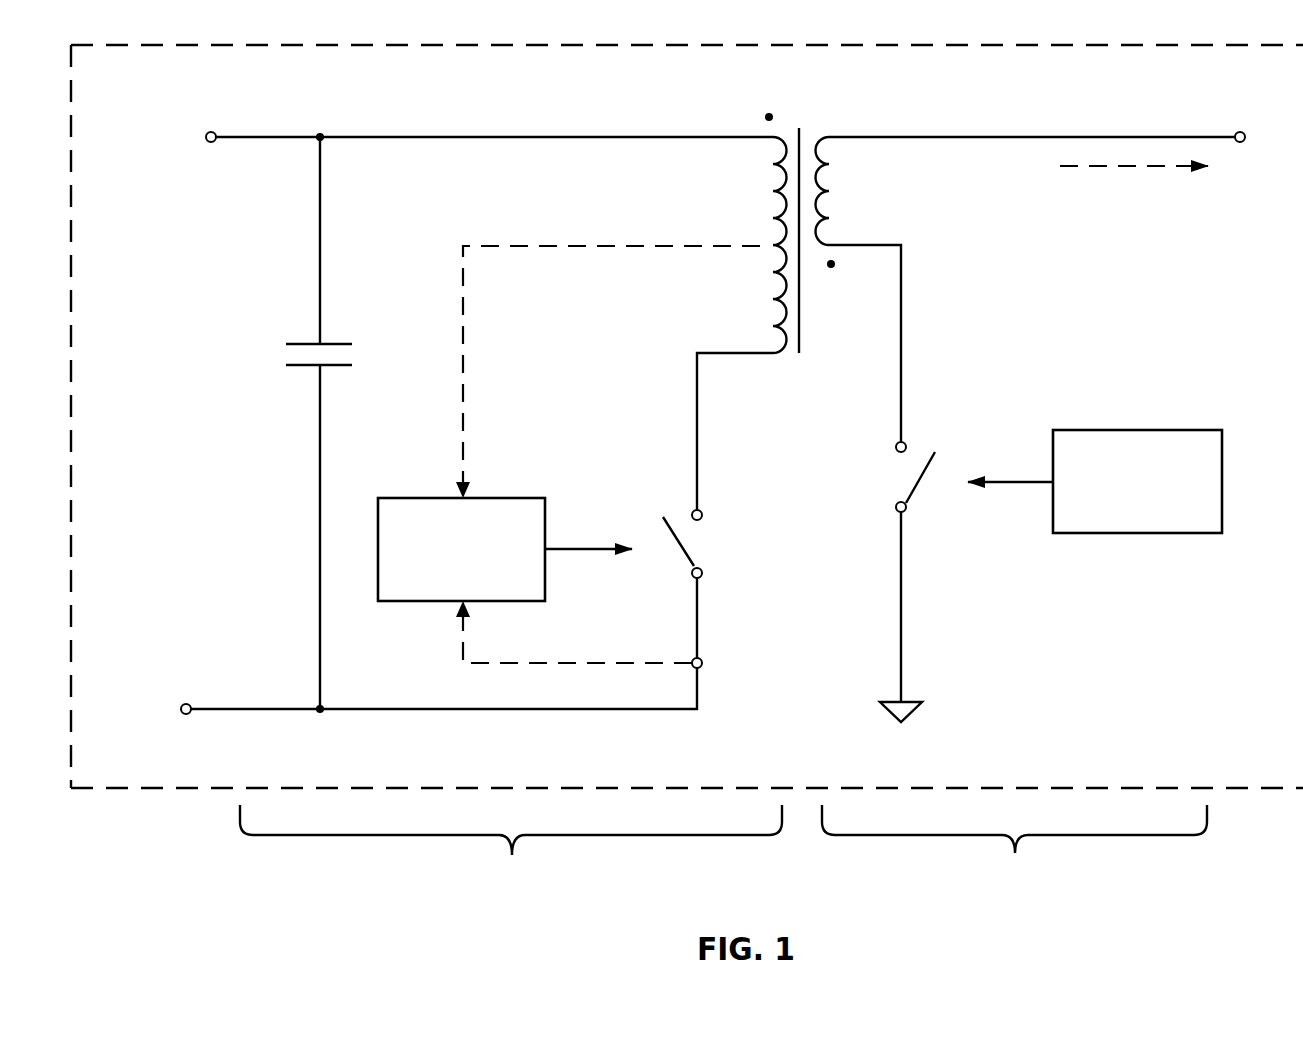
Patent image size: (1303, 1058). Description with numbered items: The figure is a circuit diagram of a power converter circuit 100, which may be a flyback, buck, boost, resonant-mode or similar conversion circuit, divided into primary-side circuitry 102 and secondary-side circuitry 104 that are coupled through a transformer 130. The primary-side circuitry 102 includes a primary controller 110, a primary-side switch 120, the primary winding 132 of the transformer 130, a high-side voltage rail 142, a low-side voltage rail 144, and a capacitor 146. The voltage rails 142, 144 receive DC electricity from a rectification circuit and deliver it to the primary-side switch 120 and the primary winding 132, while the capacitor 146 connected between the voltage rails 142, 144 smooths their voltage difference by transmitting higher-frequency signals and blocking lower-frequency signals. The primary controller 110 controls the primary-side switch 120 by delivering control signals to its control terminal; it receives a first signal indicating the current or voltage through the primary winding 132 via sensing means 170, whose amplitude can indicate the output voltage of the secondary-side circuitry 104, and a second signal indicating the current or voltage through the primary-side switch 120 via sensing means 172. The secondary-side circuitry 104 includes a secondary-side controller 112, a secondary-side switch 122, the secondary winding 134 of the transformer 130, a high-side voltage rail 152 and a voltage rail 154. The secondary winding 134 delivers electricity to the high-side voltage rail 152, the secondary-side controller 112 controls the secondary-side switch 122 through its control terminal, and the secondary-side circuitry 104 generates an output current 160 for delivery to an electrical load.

The power converter circuit 100 is at (687, 416).
The primary-side circuitry 102 is at (511, 876).
The secondary-side circuitry 104 is at (1014, 877).
The primary controller 110 is at (505, 549).
The secondary-side controller 112 is at (1095, 481).
The primary-side switch 120 is at (727, 577).
The secondary-side switch 122 is at (932, 515).
The transformer 130 is at (799, 311).
The primary winding 132 is at (727, 208).
The secondary winding 134 is at (870, 188).
The high-side voltage rail 142 is at (321, 136).
The low-side voltage rail 144 is at (322, 711).
The capacitor 146 is at (260, 380).
The high-side voltage rail 152 is at (930, 135).
The voltage rail 154 is at (951, 692).
The output current 160 is at (1136, 170).
The sensing means 170 is at (555, 248).
The sensing means 172 is at (558, 663).